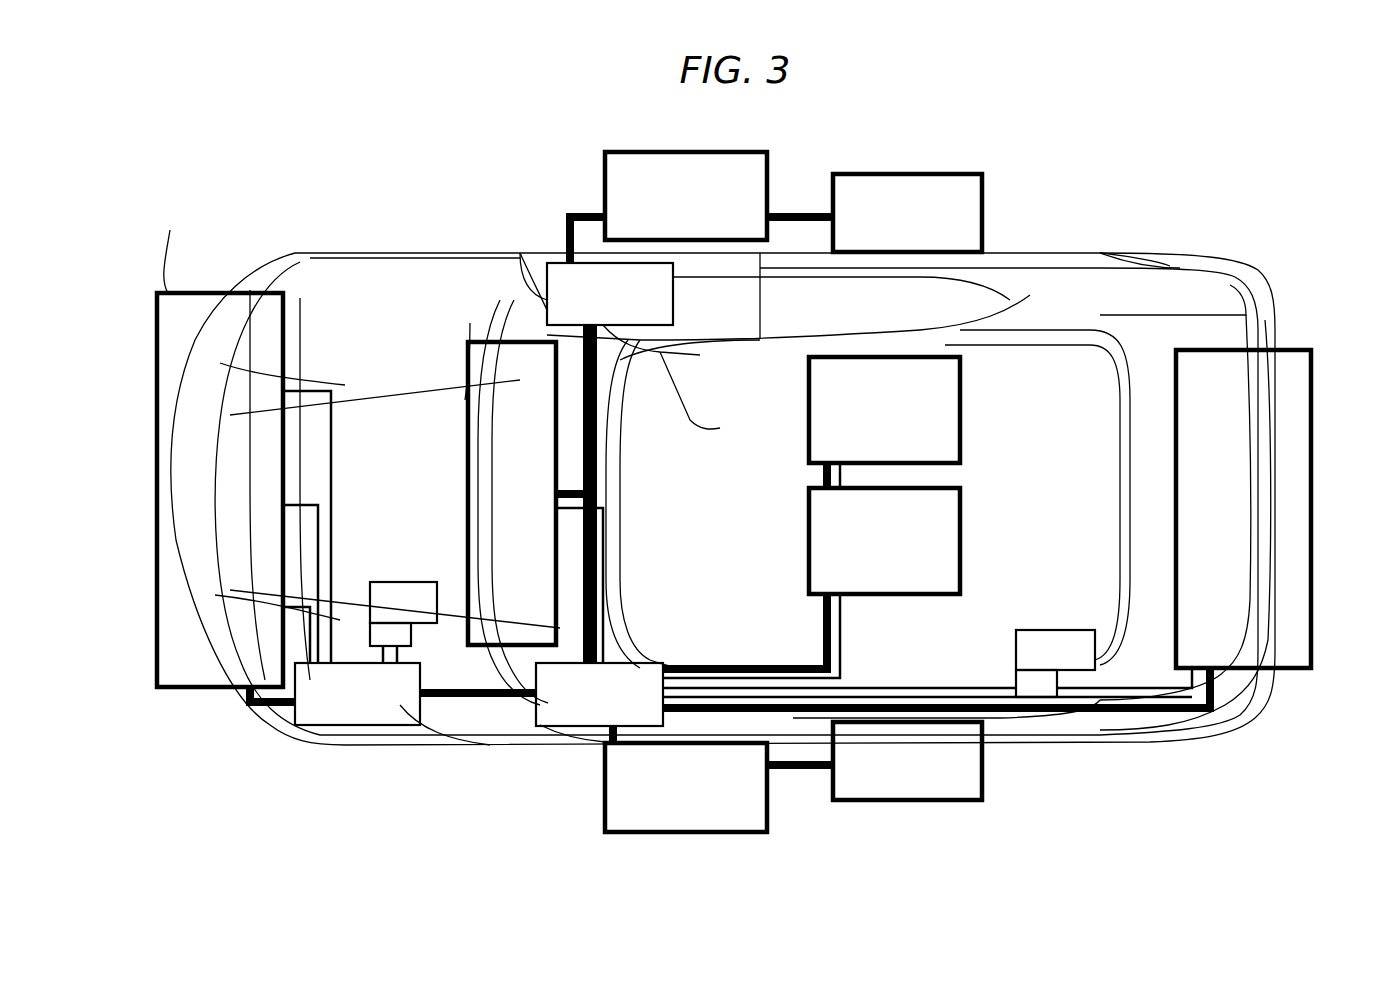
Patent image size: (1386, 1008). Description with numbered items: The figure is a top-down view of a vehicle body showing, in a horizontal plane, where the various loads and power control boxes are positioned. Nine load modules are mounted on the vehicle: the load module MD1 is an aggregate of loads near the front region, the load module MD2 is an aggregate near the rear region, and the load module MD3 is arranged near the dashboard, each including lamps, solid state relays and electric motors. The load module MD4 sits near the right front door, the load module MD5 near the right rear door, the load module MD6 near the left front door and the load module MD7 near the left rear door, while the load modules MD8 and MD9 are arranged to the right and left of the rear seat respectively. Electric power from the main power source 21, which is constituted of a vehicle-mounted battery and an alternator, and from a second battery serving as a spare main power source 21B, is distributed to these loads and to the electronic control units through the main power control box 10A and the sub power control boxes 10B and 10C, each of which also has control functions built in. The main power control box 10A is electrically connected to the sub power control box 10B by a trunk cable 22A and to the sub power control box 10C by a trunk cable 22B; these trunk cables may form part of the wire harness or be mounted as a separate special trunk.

The load module MD1 is at (185, 293).
The load module MD2 is at (1290, 350).
The load module MD3 is at (468, 438).
The load module MD4 is at (767, 191).
The load module MD5 is at (982, 218).
The load module MD6 is at (767, 813).
The load module MD7 is at (982, 772).
The load module MD8 is at (960, 377).
The load module MD9 is at (960, 538).
The main power control box 10A is at (565, 726).
The sub power control box 10B is at (553, 263).
The sub power control box 10C is at (330, 725).
The main power source 21 is at (437, 582).
The spare main power source 21B is at (1060, 630).
The trunk cable 22A is at (582, 390).
The trunk cable 22B is at (470, 700).